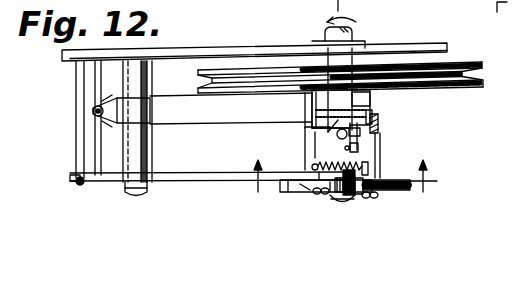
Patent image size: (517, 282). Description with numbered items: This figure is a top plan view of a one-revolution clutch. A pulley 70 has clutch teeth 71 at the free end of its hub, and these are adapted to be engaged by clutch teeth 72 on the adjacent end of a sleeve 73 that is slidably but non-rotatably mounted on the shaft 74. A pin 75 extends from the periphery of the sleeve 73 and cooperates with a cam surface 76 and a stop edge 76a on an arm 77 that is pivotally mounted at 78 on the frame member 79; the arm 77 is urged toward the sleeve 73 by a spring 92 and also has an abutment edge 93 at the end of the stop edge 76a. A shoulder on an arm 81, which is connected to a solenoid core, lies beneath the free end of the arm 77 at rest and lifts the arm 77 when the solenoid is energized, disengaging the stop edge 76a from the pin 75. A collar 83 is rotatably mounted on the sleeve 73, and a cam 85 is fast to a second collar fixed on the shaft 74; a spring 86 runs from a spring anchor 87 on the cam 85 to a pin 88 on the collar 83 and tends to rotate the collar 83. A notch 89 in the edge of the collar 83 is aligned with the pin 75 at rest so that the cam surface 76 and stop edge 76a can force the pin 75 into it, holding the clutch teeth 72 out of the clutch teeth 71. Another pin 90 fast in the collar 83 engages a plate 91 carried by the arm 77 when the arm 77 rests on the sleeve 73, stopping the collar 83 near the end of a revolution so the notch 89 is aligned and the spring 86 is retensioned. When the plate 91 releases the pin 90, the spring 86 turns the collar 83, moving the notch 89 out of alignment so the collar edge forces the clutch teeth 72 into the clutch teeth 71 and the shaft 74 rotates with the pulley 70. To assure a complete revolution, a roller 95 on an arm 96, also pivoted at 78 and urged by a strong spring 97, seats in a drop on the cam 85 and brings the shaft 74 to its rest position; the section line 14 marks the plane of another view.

The section line 14 is at (340, 187).
The pulley 70 is at (448, 86).
The clutch teeth 71 is at (362, 105).
The clutch teeth 72 is at (307, 110).
The sleeve 73 is at (349, 130).
The shaft 74 is at (352, 32).
The pin 75 is at (337, 138).
The cam surface 76 is at (338, 116).
The stop edge 76a is at (335, 132).
The arm 77 is at (210, 108).
The pivot 78 is at (140, 113).
The frame member 79 is at (205, 50).
The arm 81 is at (379, 128).
The collar 83 is at (381, 160).
The cam 85 is at (318, 193).
The spring 86 is at (343, 203).
The spring anchor 87 is at (386, 192).
The pin 88 is at (312, 186).
The notch 89 is at (318, 170).
The pin 90 is at (380, 160).
The plate 91 is at (373, 123).
The spring 92 is at (109, 118).
The abutment edge 93 is at (361, 133).
The roller 95 is at (321, 195).
The arm 96 is at (205, 181).
The spring 97 is at (84, 183).